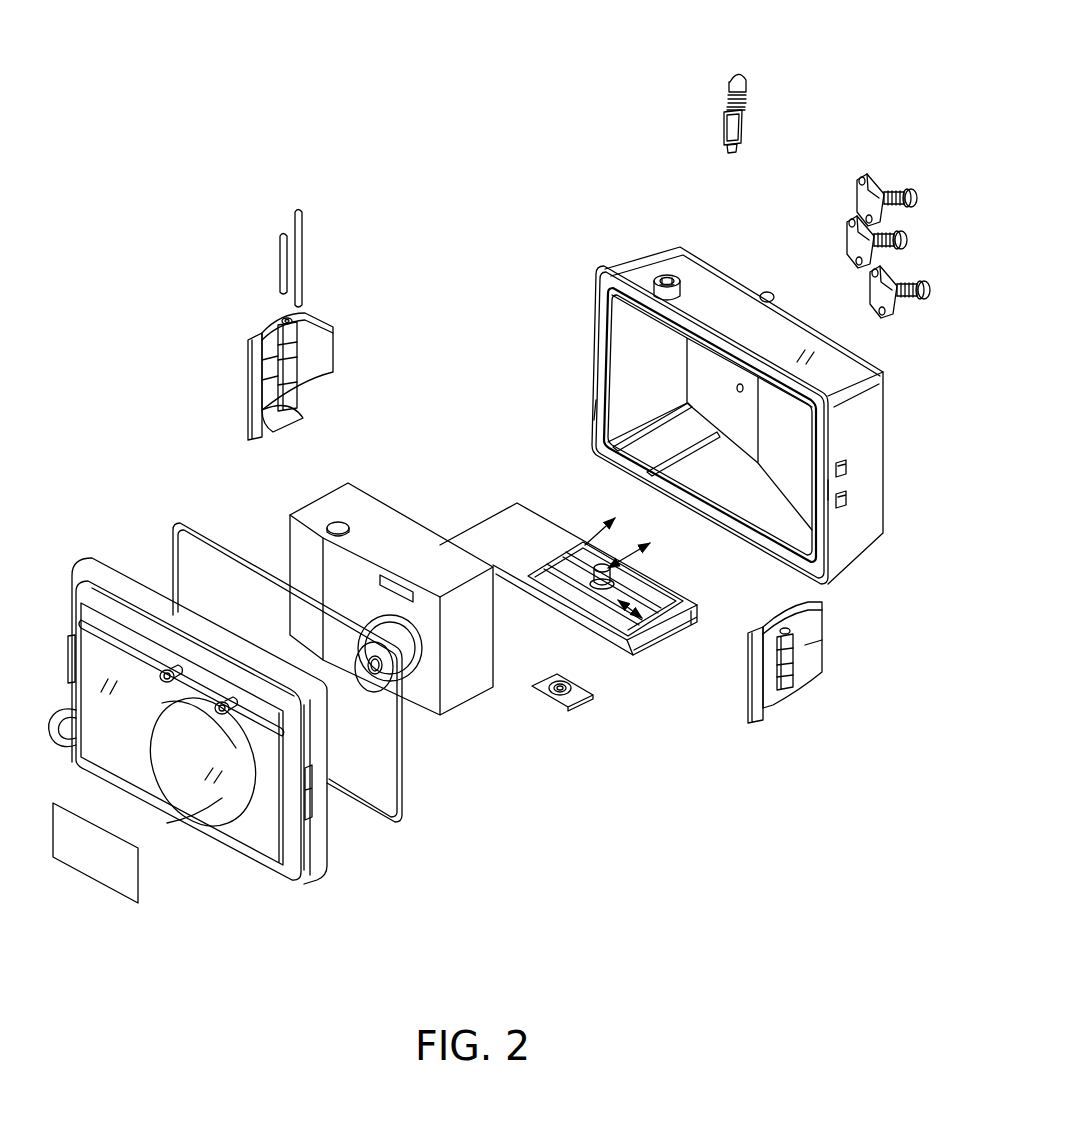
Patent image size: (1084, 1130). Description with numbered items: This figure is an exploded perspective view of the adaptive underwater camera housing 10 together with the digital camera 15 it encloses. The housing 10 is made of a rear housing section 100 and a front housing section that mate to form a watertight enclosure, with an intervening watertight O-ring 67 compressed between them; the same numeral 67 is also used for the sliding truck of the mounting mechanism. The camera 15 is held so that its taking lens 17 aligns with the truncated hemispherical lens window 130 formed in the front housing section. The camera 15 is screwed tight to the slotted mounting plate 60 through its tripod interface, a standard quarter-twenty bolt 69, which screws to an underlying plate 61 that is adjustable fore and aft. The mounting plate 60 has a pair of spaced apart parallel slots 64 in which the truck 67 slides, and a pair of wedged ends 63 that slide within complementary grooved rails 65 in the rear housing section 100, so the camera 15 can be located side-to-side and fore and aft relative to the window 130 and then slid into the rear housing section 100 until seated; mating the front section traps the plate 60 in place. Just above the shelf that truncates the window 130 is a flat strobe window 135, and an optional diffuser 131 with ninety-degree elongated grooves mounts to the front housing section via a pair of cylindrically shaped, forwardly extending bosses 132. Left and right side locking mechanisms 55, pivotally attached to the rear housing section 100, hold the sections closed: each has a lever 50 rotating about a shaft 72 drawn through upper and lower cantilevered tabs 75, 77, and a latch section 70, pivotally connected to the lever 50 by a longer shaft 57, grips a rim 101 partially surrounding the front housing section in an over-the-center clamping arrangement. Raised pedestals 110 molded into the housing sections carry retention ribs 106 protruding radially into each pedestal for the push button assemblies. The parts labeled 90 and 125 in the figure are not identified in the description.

The adaptive underwater camera housing 10 is at (405, 108).
The digital camera 15 is at (389, 520).
The taking lens 17 is at (377, 688).
The lever 50 is at (320, 328).
The locking mechanism 55 is at (266, 316).
The longer shaft 57 is at (301, 258).
The slotted mounting plate 60 is at (535, 561).
The underlying plate 61 is at (580, 694).
The wedged end 63 is at (663, 634).
The parallel slot 64 is at (647, 589).
The grooved rail 65 is at (596, 455).
The sliding truck 67 is at (208, 535).
The tripod interface bolt 69 is at (601, 565).
The latch section 70 is at (255, 396).
The shaft 72 is at (281, 261).
The upper cantilevered tab 75 is at (846, 478).
The lower cantilevered tab 77 is at (846, 505).
The fastener clip 90 is at (752, 66).
The rear housing section 100 is at (774, 328).
The rim 101 is at (300, 883).
The retention rib 106 is at (676, 274).
The raised pedestal 110 is at (683, 298).
The indicator 125 is at (768, 291).
The truncated hemispherical lens window 130 is at (220, 800).
The diffuser 131 is at (107, 868).
The boss 132 is at (167, 669).
The flat strobe window 135 is at (203, 703).